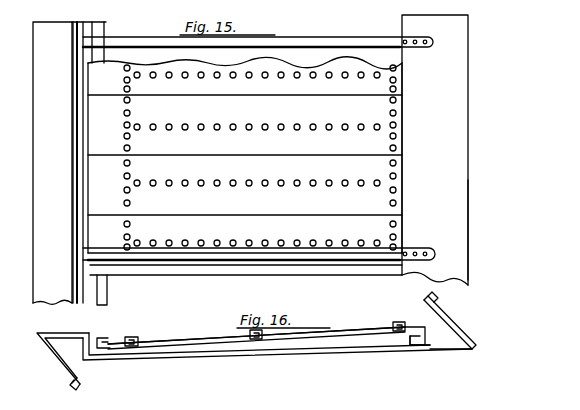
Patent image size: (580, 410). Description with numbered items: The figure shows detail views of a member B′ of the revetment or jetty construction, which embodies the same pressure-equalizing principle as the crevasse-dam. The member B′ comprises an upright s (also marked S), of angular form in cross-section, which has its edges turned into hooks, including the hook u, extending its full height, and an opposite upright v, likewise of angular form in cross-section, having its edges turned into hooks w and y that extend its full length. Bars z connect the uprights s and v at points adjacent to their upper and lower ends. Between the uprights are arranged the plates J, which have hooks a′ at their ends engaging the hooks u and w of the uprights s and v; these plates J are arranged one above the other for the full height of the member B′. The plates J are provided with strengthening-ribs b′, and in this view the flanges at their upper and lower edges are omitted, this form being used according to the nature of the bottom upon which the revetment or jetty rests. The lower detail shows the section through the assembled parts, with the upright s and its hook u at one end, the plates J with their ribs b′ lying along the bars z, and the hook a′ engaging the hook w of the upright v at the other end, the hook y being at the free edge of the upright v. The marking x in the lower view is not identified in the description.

In FIG. 15, the upright S is at (68, 163).
In FIG. 15, the upright v is at (435, 150).
In FIG. 16, the upright v is at (456, 322).
In FIG. 15, the plate J is at (245, 155).
In FIG. 16, the plate J is at (332, 330).
In FIG. 15, the bar z is at (295, 38).
In FIG. 16, the bar z is at (300, 376).
In FIG. 15, the member B′ is at (462, 228).
In FIG. 16, the member B′ is at (456, 357).
In FIG. 16, the hook y is at (421, 291).
In FIG. 16, the hook u is at (112, 337).
In FIG. 16, the strengthening-rib b′ is at (212, 333).
In FIG. 16, the upright s is at (57, 364).
In FIG. 16, the hook x is at (80, 390).
In FIG. 16, the hook w is at (408, 344).
In FIG. 16, the hook a′ is at (426, 336).